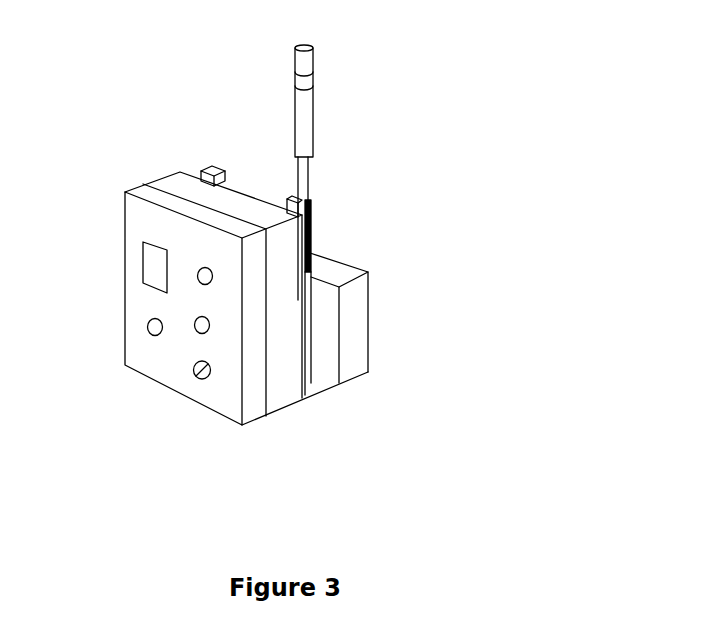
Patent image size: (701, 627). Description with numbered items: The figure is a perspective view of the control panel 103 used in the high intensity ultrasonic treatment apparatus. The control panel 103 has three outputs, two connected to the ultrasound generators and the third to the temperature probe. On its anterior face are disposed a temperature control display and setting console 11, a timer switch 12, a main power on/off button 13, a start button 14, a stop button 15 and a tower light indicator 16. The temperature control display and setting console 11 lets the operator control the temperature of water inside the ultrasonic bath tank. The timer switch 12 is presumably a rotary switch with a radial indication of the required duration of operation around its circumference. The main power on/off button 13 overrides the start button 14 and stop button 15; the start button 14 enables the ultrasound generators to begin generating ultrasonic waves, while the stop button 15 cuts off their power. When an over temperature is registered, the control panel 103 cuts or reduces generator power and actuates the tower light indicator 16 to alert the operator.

The control panel 103 is at (458, 147).
The temperature control display and setting console 11 is at (148, 262).
The timer switch 12 is at (148, 328).
The main power on/off button 13 is at (202, 370).
The start button 14 is at (202, 325).
The stop button 15 is at (205, 276).
The tower light indicator 16 is at (313, 77).